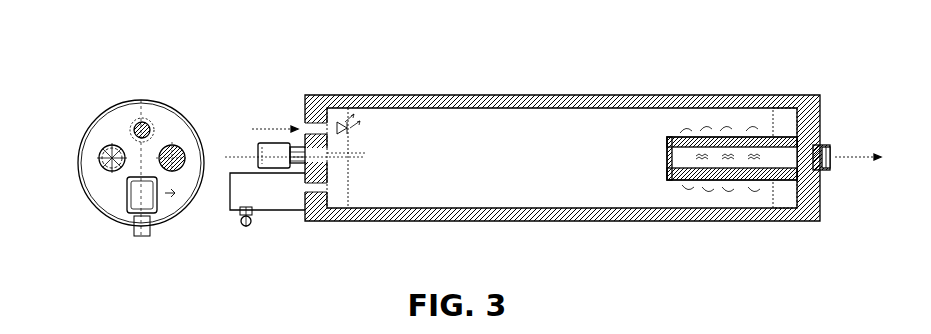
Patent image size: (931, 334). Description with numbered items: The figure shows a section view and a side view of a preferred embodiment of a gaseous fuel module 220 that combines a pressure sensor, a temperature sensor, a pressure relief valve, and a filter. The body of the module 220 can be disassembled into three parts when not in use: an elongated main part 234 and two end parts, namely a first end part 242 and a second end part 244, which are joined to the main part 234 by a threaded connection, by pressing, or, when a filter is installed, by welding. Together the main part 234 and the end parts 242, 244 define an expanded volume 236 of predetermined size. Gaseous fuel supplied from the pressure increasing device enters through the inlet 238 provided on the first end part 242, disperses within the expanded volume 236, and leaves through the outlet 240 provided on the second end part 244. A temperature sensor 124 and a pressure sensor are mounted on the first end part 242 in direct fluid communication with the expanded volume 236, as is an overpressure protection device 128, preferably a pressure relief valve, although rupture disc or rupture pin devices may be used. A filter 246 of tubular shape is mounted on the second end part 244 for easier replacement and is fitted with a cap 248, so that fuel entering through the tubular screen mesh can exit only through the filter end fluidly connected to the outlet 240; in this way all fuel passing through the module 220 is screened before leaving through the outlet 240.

The temperature sensor 124 is at (181, 171).
The overpressure protection device 128 is at (262, 196).
The module 220 is at (553, 139).
The elongated main part 234 is at (652, 95).
The expanded volume 236 is at (423, 130).
The inlet 238 is at (304, 123).
The outlet 240 is at (830, 150).
The first end part 242 is at (303, 97).
The second end part 244 is at (797, 100).
The filter 246 is at (720, 181).
The cap 248 is at (667, 160).